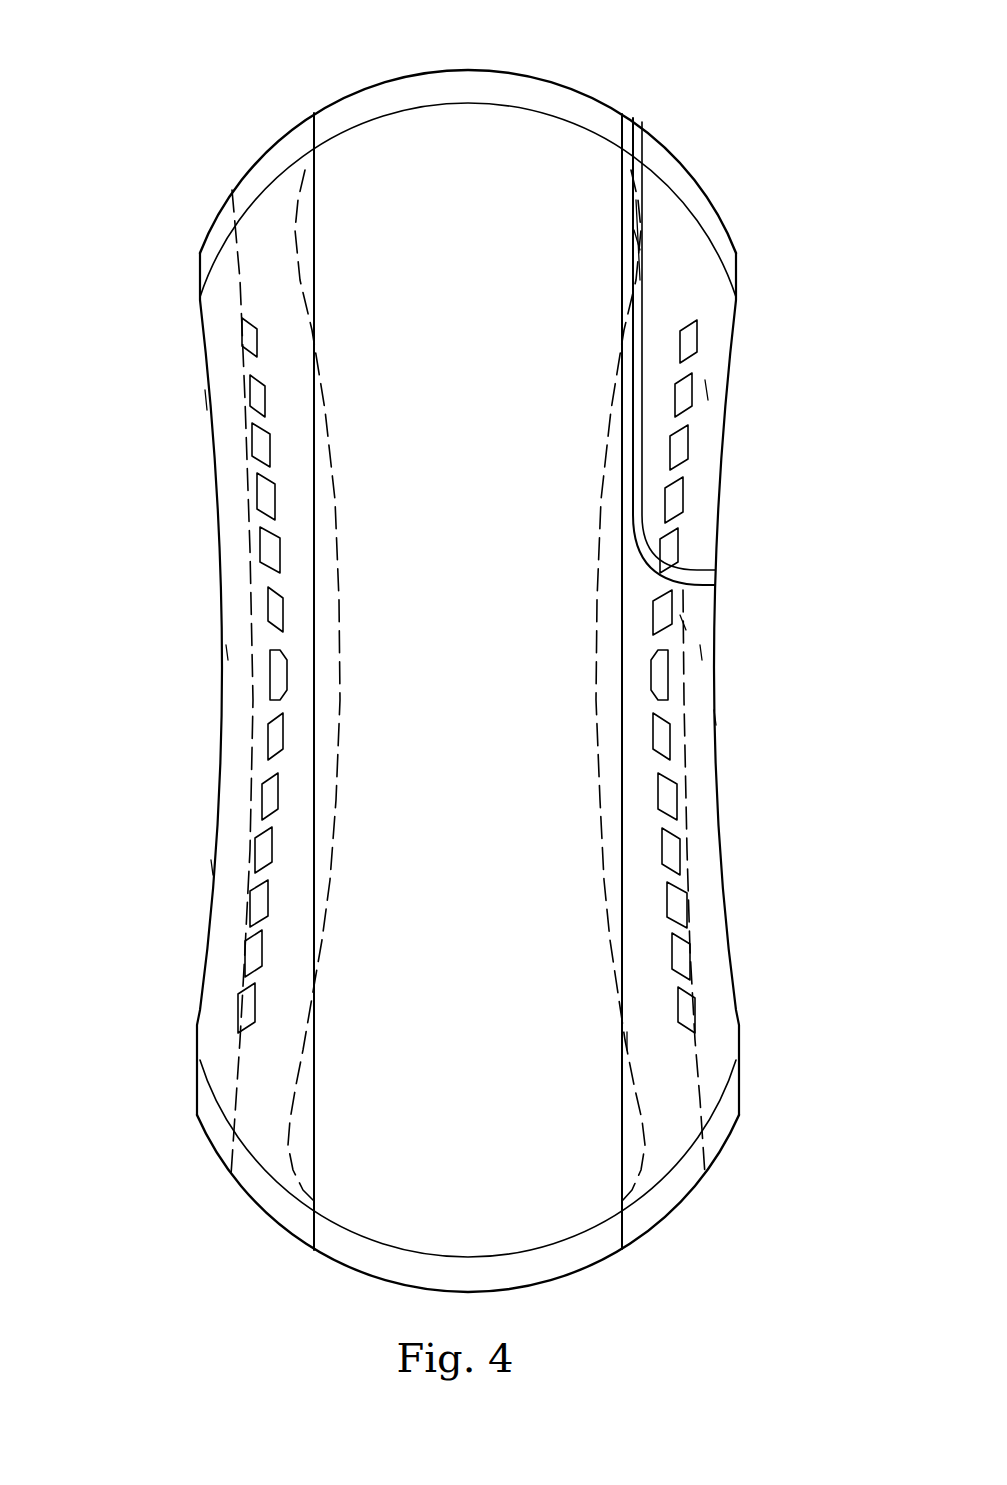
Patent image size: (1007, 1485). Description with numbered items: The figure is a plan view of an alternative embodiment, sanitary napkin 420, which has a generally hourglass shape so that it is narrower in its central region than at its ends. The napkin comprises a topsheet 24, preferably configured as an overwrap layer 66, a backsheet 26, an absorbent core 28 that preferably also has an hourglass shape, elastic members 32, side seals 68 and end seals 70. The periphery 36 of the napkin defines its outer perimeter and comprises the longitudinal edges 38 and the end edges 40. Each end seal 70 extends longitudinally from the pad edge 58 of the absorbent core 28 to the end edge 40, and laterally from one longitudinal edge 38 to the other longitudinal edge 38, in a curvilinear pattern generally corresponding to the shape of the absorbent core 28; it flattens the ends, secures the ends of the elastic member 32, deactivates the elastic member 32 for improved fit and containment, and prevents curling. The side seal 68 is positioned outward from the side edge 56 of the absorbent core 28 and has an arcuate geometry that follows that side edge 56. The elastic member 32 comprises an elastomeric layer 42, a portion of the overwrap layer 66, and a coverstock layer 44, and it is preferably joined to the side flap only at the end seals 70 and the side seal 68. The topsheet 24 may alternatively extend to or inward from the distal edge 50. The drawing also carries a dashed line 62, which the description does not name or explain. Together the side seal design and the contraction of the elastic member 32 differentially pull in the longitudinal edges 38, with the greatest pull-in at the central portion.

The sanitary napkin 420 is at (232, 153).
The topsheet 24 is at (449, 279).
The backsheet 26 is at (685, 277).
The absorbent core 28 is at (638, 243).
The elastic member 32 is at (228, 652).
The periphery 36 is at (207, 397).
The longitudinal edge 38 is at (213, 865).
The end edge 40 is at (480, 68).
The elastomeric layer 42 is at (707, 388).
The coverstock layer 44 is at (242, 782).
The distal edge 50 is at (682, 622).
The side edge 56 is at (296, 1078).
The pad edge 58 is at (362, 123).
The absorbent core outline 62 is at (313, 1088).
The overwrap layer 66 is at (636, 240).
The side seal 68 is at (257, 402).
The end seal 70 is at (520, 103).